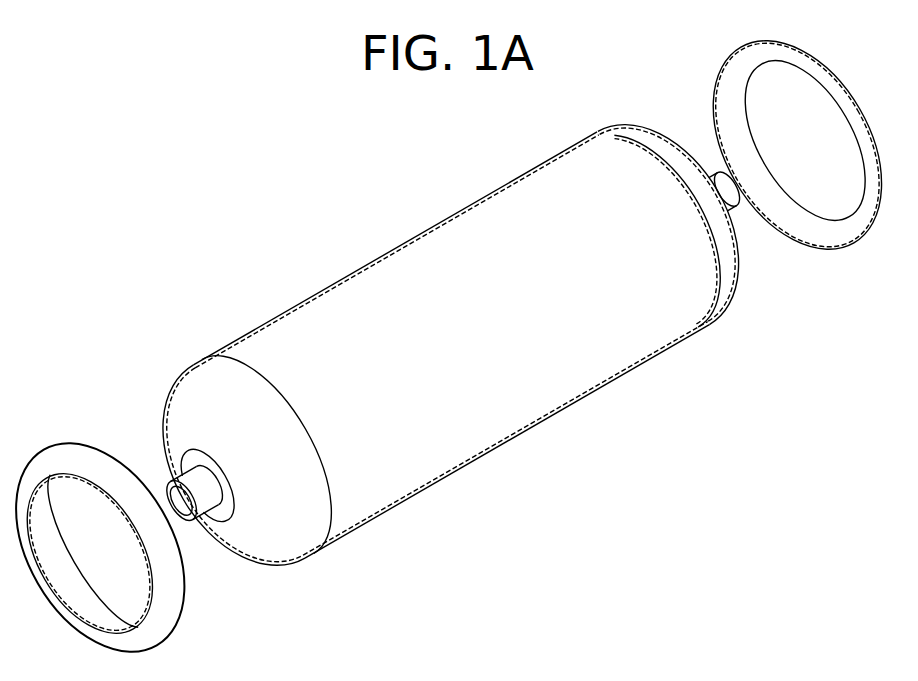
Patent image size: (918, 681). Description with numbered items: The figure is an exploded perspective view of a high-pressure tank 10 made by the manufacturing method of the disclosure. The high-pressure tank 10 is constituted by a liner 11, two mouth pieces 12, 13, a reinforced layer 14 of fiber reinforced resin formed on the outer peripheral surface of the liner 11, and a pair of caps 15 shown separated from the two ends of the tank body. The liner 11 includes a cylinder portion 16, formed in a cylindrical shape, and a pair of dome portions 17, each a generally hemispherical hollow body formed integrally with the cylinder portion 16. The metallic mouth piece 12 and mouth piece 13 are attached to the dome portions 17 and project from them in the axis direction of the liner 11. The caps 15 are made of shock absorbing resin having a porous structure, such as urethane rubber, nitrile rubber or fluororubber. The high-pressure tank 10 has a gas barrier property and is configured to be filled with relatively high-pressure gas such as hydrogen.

The high-pressure tank 10 is at (412, 207).
The liner 11 is at (365, 265).
The mouth piece 12 is at (187, 528).
The mouth piece 13 is at (706, 173).
The reinforced layer 14 is at (498, 189).
The cap 15 is at (67, 452).
The cylinder portion 16 is at (303, 334).
The dome portion 17 is at (193, 397).